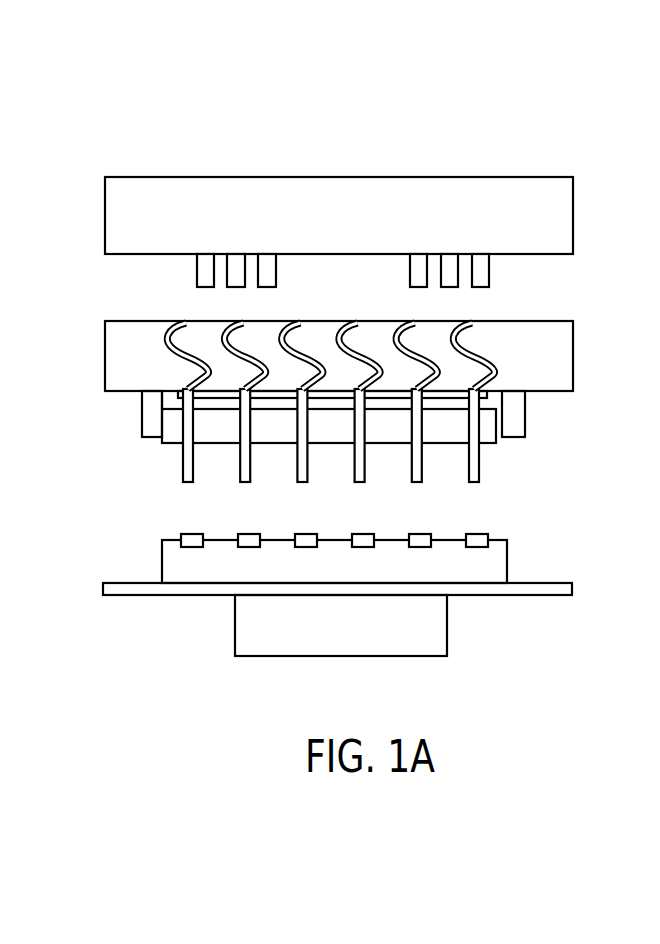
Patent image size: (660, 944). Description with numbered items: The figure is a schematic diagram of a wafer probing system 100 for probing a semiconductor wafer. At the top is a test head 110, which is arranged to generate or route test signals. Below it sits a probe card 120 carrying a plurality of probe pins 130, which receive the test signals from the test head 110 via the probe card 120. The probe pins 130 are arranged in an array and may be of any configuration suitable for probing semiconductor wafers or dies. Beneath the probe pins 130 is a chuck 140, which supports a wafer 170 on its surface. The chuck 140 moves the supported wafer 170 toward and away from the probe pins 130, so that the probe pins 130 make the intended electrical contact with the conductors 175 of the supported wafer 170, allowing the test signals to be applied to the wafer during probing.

The wafer probing system 100 is at (405, 99).
The test head 110 is at (574, 215).
The probe card 120 is at (526, 412).
The probe pins 130 is at (480, 460).
The chuck 140 is at (447, 625).
The wafer 170 is at (507, 563).
The conductors 175 is at (489, 536).